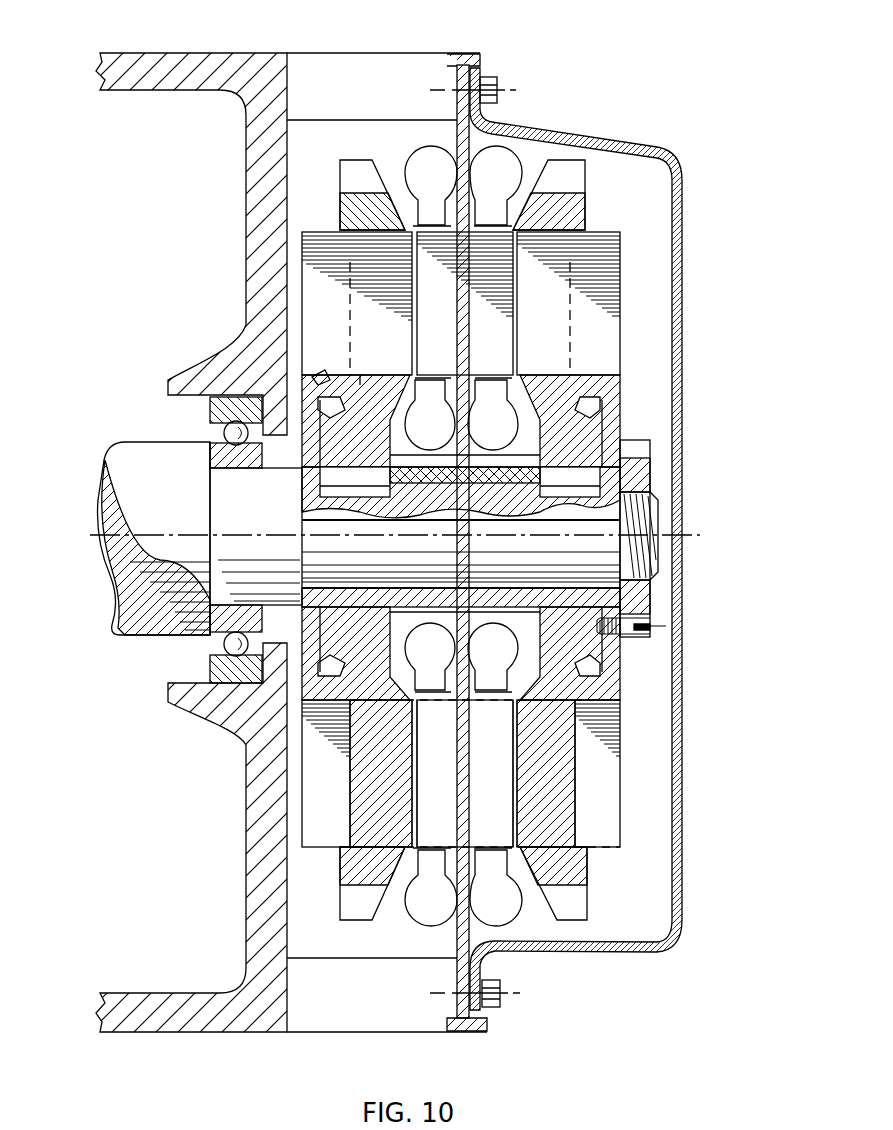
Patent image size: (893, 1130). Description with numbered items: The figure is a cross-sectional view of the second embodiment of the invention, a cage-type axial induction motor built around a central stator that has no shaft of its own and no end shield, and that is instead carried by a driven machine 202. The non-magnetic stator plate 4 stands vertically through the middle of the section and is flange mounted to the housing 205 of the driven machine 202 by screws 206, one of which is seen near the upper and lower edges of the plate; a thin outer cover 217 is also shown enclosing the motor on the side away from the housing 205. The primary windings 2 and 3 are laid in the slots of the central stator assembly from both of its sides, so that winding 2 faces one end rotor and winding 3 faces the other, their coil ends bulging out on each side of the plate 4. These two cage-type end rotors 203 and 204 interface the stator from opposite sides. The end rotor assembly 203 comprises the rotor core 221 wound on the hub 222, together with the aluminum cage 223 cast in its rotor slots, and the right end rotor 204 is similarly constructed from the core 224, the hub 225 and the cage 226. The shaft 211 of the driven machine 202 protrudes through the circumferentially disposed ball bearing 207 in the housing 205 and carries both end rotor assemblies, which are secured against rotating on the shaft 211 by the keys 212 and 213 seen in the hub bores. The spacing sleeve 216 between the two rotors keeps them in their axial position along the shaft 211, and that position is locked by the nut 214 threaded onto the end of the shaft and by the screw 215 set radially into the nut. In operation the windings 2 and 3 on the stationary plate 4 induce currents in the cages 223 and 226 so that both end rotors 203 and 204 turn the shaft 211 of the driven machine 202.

The primary winding 2 is at (428, 165).
The primary winding 3 is at (474, 505).
The non-magnetic stator plate 4 is at (470, 53).
The driven machine 202 is at (191, 50).
The end rotor assembly 203 is at (315, 888).
The end rotor 204 is at (598, 865).
The housing 205 is at (350, 52).
The screw 206 is at (500, 82).
The ball bearing 207 is at (218, 407).
The shaft 211 is at (138, 457).
The key 212 is at (342, 490).
The key 213 is at (570, 488).
The nut 214 is at (650, 475).
The screw 215 is at (652, 638).
The spacing sleeve 216 is at (430, 600).
The cover housing 217 is at (683, 325).
The rotor core 221 is at (398, 335).
The hub 222 is at (327, 372).
The aluminum cage 223 is at (340, 200).
The core 224 is at (563, 335).
The hub 225 is at (620, 392).
The cage 226 is at (595, 205).